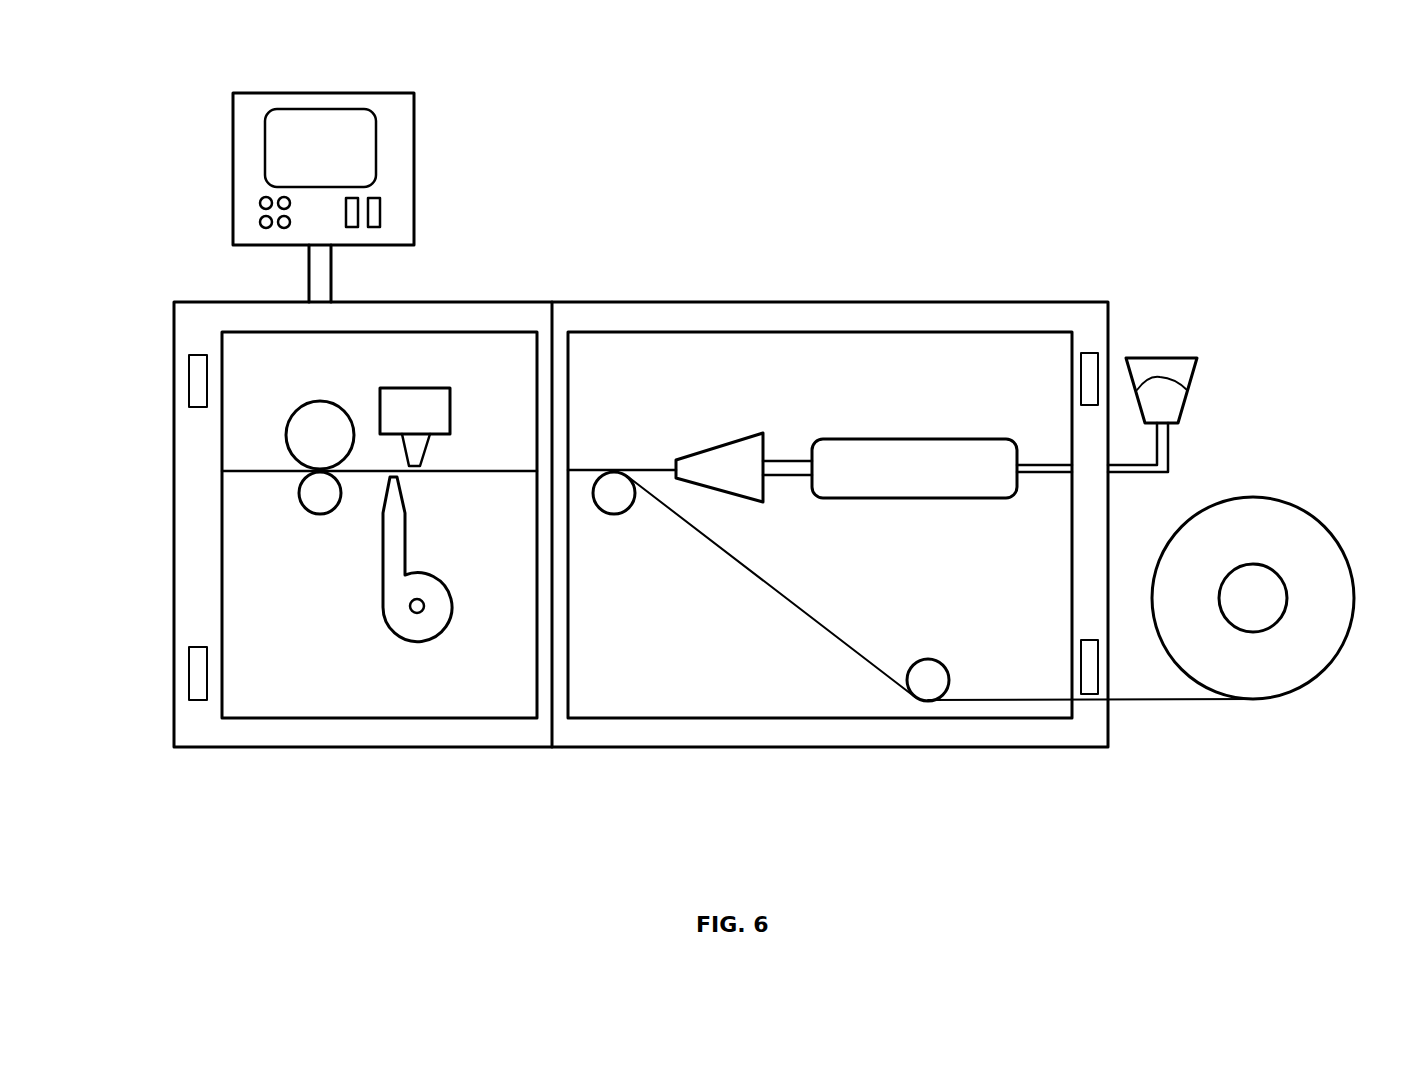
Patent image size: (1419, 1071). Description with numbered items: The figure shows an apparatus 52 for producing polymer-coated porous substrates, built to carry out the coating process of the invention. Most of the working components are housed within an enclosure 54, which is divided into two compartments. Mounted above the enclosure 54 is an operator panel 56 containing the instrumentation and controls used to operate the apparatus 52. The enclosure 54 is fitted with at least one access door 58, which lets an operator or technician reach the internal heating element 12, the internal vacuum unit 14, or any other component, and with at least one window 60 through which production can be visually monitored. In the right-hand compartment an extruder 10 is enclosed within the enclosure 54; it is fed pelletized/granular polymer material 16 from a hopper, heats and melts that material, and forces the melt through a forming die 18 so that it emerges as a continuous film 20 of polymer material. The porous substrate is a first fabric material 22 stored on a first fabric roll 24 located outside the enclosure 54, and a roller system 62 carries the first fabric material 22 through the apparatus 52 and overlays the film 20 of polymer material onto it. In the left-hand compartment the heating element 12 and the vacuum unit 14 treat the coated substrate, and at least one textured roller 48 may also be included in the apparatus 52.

The extruder 10 is at (933, 436).
The heating element 12 is at (447, 383).
The vacuum unit 14 is at (440, 633).
The pelletized/granular polymer material 16 is at (1163, 397).
The forming die 18 is at (745, 435).
The film of polymer material 20 is at (645, 468).
The first fabric material 22 is at (752, 571).
The first fabric roll 24 is at (1353, 573).
The textured roller 48 is at (310, 401).
The apparatus 52 is at (870, 172).
The enclosure 54 is at (170, 303).
The operator panel 56 is at (249, 88).
The access door 58 is at (777, 317).
The window 60 is at (935, 358).
The roller system 62 is at (300, 507).